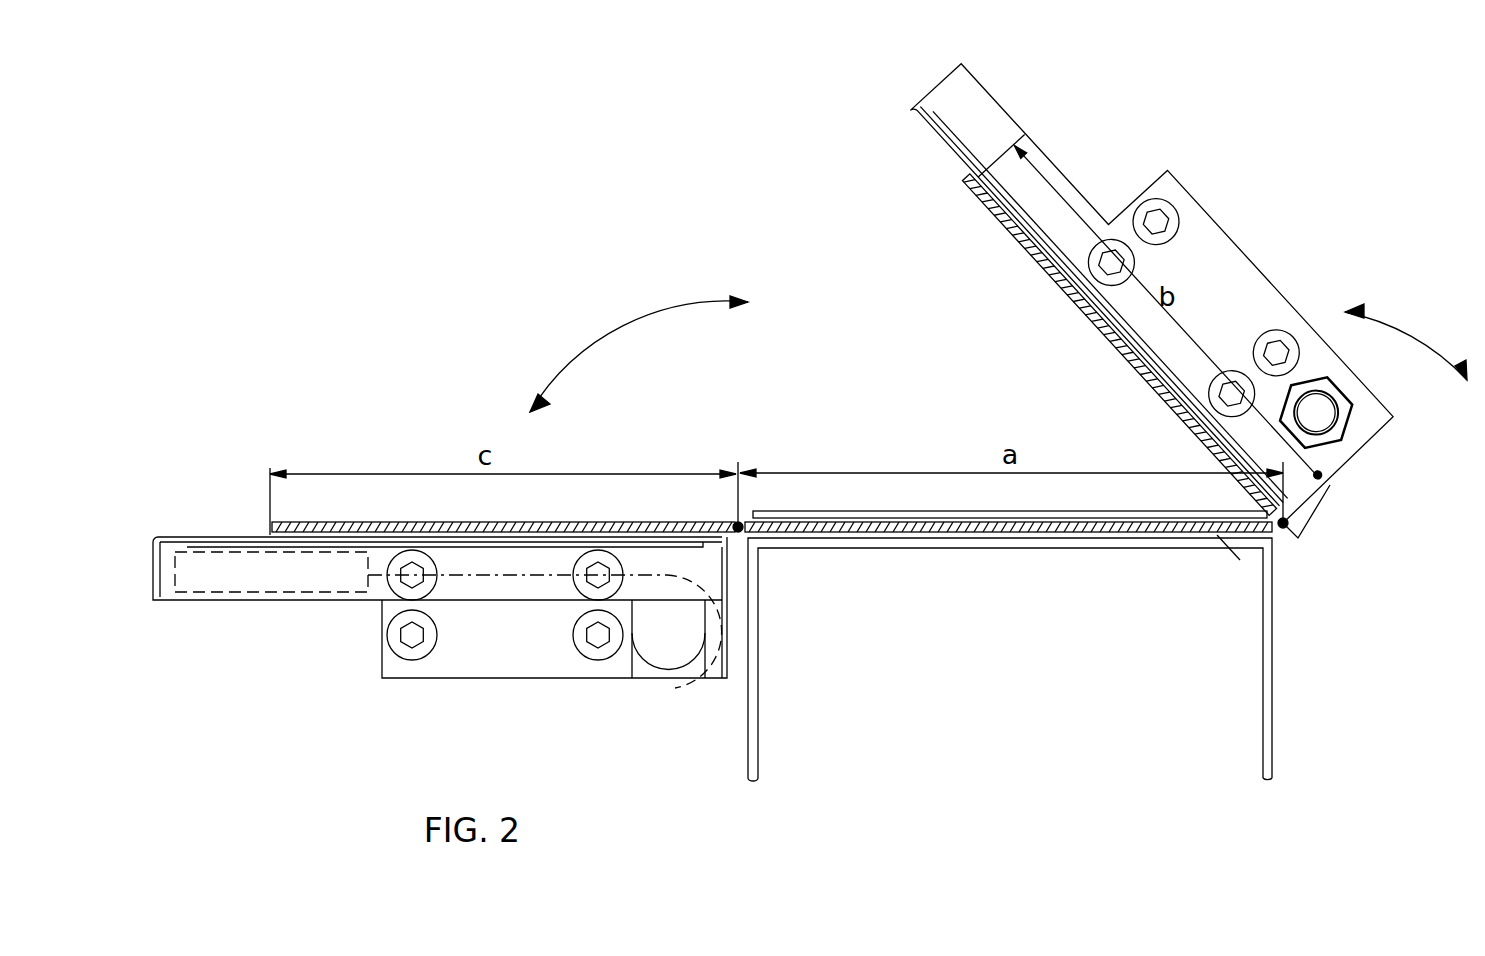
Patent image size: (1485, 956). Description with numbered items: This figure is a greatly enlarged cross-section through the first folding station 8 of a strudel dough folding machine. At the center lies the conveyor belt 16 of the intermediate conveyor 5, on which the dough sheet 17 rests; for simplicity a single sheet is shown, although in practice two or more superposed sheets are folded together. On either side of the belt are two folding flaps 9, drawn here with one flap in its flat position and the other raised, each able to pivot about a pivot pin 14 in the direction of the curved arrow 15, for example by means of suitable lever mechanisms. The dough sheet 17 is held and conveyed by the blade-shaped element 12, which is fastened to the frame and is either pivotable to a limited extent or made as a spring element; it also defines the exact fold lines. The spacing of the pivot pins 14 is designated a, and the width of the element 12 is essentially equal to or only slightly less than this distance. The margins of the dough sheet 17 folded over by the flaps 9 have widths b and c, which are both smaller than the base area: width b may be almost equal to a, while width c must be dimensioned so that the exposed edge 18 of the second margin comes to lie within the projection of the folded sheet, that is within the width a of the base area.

The intermediate conveyor 5 is at (1275, 711).
The first folding station 8 is at (653, 262).
The folding flap 9 is at (168, 537).
The blade-shaped element 12 is at (853, 511).
The pivot pin 14 is at (736, 522).
The arrow 15 is at (1438, 288).
The conveyor belt 16 is at (1240, 560).
The dough sheet 17 is at (633, 522).
The exposed edge 18 is at (268, 524).